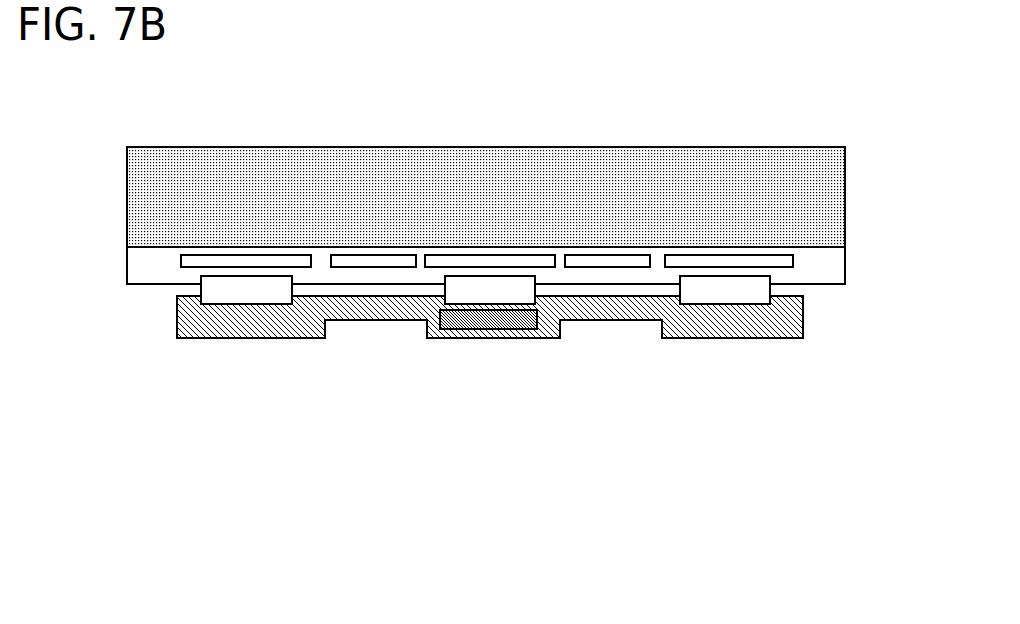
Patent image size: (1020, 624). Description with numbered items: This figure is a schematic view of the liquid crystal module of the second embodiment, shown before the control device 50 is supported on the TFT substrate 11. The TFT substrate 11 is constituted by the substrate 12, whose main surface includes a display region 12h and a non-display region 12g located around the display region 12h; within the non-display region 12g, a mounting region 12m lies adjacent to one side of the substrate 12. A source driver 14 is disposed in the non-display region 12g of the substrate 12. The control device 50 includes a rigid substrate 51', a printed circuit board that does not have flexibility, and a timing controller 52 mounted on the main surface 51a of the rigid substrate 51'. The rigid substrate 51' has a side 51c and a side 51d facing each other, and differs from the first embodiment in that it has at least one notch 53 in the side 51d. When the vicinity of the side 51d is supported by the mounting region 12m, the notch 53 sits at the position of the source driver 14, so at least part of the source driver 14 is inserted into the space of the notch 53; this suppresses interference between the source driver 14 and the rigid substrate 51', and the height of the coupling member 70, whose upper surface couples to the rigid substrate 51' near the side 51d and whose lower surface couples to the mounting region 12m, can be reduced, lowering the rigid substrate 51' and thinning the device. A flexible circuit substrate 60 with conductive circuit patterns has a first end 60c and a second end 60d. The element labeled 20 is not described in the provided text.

The TFT substrate 11 is at (140, 268).
The substrate 12 is at (486, 254).
The non-display region 12g is at (873, 237).
The display region 12h is at (855, 150).
The mounting region 12m is at (851, 253).
The source driver 14 is at (592, 262).
The cover member 20 is at (193, 155).
The control device 50 is at (195, 368).
The main surface 51a is at (273, 319).
The side 51c is at (624, 286).
The side 51d is at (535, 350).
The rigid substrate 51' is at (388, 383).
The timing controller 52 is at (493, 318).
The notch 53 is at (602, 348).
The flexible circuit substrate 60 is at (710, 285).
The first end 60c is at (744, 311).
The second end 60d is at (736, 264).
The coupling member 70 is at (488, 258).